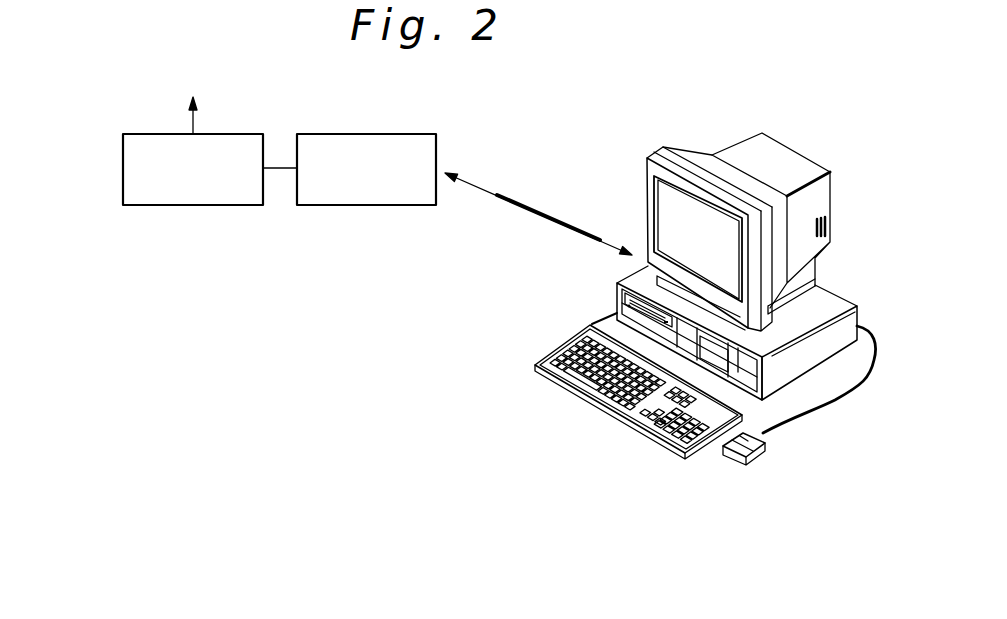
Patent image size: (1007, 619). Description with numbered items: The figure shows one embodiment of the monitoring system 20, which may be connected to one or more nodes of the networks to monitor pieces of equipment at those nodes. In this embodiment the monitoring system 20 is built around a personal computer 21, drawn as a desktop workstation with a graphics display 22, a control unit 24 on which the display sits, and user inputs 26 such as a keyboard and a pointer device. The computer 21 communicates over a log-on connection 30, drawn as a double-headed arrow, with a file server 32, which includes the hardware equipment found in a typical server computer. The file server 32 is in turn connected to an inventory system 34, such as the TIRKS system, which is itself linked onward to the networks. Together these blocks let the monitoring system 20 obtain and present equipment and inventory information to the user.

The monitoring system 20 is at (288, 408).
The personal computer 21 is at (814, 134).
The graphics display 22 is at (648, 210).
The control unit 24 is at (617, 297).
The user inputs 26 is at (755, 452).
The log-on connection 30 is at (497, 195).
The file server 32 is at (365, 205).
The inventory system 34 is at (193, 205).